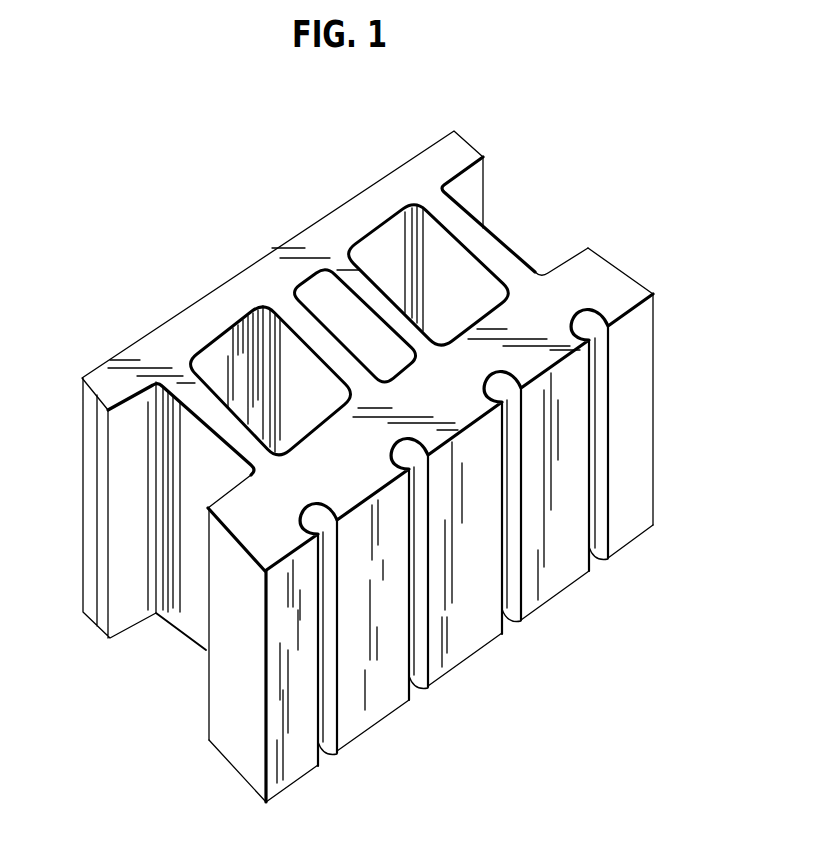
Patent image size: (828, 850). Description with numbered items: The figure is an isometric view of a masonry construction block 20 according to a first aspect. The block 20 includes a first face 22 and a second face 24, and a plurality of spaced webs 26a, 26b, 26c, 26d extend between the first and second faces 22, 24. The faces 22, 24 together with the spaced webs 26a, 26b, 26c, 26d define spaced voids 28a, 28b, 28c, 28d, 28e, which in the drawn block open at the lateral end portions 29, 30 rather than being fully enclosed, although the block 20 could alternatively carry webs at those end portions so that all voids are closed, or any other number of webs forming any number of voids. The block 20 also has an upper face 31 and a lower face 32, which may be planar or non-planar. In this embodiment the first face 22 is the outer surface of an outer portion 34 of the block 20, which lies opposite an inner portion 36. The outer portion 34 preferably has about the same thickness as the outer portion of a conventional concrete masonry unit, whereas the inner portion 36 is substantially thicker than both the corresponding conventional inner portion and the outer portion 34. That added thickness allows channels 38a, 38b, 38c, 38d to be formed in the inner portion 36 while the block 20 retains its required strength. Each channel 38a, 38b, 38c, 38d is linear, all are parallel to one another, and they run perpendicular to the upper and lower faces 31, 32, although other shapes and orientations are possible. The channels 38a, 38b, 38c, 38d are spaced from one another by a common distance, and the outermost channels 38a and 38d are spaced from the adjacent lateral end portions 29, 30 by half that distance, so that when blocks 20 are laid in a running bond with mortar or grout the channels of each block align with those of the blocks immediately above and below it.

The masonry construction block 20 is at (67, 543).
The first face 22 is at (186, 309).
The second face 24 is at (294, 778).
The web 26a is at (160, 334).
The web 26b is at (305, 282).
The web 26c is at (327, 290).
The web 26d is at (437, 205).
The void 28a is at (192, 600).
The void 28b is at (237, 350).
The void 28c is at (313, 307).
The void 28d is at (397, 253).
The void 28e is at (508, 255).
The lateral end portion 29 is at (250, 770).
The lateral end portion 30 is at (657, 420).
The upper face 31 is at (581, 298).
The lower face 32 is at (632, 546).
The outer portion 34 is at (87, 410).
The inner portion 36 is at (233, 738).
The channel 38a is at (322, 748).
The channel 38b is at (417, 690).
The channel 38c is at (508, 621).
The channel 38d is at (591, 552).